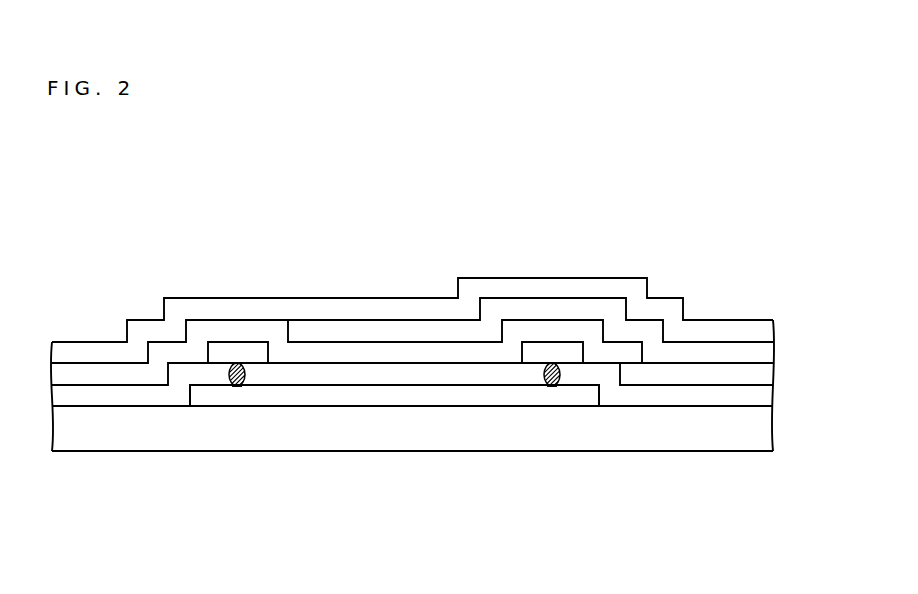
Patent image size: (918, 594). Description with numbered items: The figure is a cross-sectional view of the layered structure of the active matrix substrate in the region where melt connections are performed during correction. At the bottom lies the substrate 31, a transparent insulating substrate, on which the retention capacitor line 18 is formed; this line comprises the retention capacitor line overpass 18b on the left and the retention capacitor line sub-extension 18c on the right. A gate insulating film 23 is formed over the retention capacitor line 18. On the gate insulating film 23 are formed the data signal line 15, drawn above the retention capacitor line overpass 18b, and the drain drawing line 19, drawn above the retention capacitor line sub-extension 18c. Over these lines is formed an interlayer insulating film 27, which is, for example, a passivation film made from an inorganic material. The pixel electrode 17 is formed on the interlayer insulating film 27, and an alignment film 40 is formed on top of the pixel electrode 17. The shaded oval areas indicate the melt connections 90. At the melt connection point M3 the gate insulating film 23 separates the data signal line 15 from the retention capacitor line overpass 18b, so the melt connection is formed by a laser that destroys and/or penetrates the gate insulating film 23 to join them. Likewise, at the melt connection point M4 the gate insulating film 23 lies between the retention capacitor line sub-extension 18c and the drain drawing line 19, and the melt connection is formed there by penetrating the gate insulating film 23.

The alignment film 40 is at (755, 332).
The pixel electrode 17 is at (755, 354).
The interlayer insulating film 27 is at (755, 377).
The gate insulating film 23 is at (755, 398).
The substrate 31 is at (755, 431).
The data signal line 15 is at (237, 358).
The drain drawing line 19 is at (552, 355).
The melt connection 90 is at (236, 387).
The melt connection point M3 is at (242, 411).
The melt connection point M4 is at (557, 411).
The retention capacitor line 18 is at (592, 411).
The retention capacitor line overpass 18b is at (265, 395).
The retention capacitor line sub-extension 18c is at (502, 397).